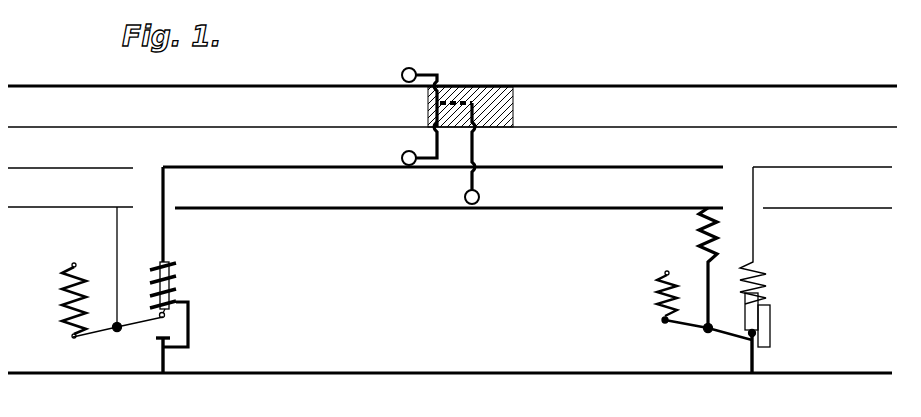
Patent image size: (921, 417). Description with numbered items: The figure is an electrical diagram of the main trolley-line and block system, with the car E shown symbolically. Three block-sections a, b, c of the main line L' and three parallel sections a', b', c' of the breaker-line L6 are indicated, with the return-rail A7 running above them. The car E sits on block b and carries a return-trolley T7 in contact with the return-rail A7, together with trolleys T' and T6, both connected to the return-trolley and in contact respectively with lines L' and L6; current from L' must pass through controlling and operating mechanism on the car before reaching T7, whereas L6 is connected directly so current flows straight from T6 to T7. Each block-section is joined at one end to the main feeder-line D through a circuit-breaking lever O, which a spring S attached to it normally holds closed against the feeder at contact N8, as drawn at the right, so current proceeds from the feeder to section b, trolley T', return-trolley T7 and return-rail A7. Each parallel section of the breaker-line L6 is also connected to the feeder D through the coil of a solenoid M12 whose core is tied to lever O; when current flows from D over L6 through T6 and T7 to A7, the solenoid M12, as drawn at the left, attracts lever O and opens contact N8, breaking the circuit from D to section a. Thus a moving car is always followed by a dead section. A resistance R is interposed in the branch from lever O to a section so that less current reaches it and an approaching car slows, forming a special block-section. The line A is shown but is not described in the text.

The return-rail A7 is at (452, 72).
The main conductor A is at (452, 117).
The car E is at (481, 107).
The return-trolley T7 is at (408, 88).
The trolley T6 is at (408, 143).
The trolley T' is at (486, 155).
The breaker-line L6 is at (367, 177).
The main line L' is at (371, 219).
The block-section of the breaker-line a' is at (70, 178).
The block-section of the main line a is at (70, 216).
The block-section of the breaker-line b' is at (443, 177).
The block-section of the main line b is at (449, 217).
The block-section of the breaker-line c' is at (822, 177).
The block-section of the main line c is at (827, 217).
The spring S is at (359, 300).
The circuit-breaking lever O is at (412, 335).
The solenoid M12 is at (476, 248).
The contact N8 is at (171, 337).
The resistance R is at (697, 268).
The main feeder-line D is at (450, 360).